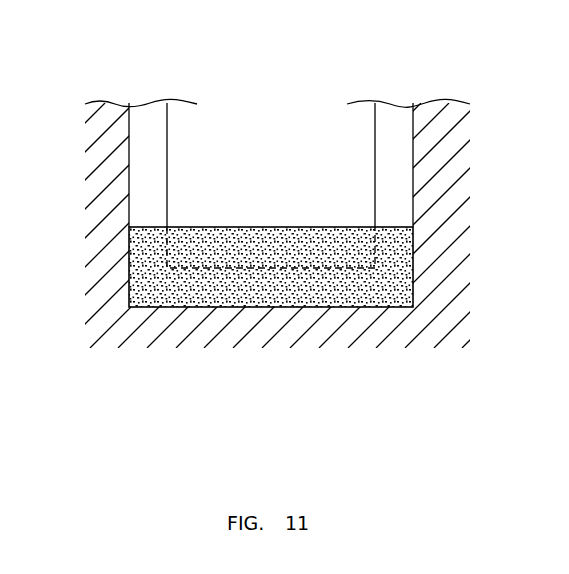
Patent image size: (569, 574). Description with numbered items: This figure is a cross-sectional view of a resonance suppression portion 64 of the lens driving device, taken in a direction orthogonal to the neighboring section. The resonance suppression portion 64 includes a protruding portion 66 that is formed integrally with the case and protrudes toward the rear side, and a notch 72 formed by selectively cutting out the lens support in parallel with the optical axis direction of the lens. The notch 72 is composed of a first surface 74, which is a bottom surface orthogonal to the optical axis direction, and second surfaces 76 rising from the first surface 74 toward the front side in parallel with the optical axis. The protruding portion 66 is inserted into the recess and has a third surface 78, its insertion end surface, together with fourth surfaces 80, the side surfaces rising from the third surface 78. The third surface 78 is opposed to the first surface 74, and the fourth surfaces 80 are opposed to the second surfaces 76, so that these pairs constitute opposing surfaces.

The resonance suppression portion 64 is at (305, 84).
The protruding portion 66 is at (216, 136).
The notch 72 is at (410, 136).
The first surface 74 is at (287, 304).
The second surface 76 is at (129, 179).
The third surface 78 is at (245, 304).
The fourth surface 80 is at (166, 133).